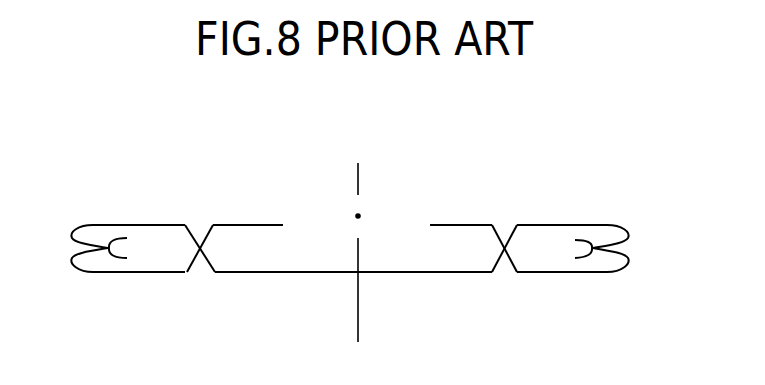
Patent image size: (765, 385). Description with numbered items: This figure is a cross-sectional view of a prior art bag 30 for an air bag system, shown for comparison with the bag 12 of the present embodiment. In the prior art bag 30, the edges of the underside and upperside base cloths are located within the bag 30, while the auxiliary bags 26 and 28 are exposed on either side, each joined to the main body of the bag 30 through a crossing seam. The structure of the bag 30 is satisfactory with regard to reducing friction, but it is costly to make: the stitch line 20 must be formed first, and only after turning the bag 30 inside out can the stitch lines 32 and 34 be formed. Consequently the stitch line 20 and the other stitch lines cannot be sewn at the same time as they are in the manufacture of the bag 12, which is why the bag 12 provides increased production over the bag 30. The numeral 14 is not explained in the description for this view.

The bag 12 is at (453, 225).
The lower conductor strip 14 is at (377, 257).
The stitch line 20 is at (598, 255).
The auxiliary bag 26 is at (159, 237).
The auxiliary bag 28 is at (552, 248).
The prior art bag 30 is at (230, 272).
The stitch line 32 is at (198, 257).
The stitch line 34 is at (501, 253).